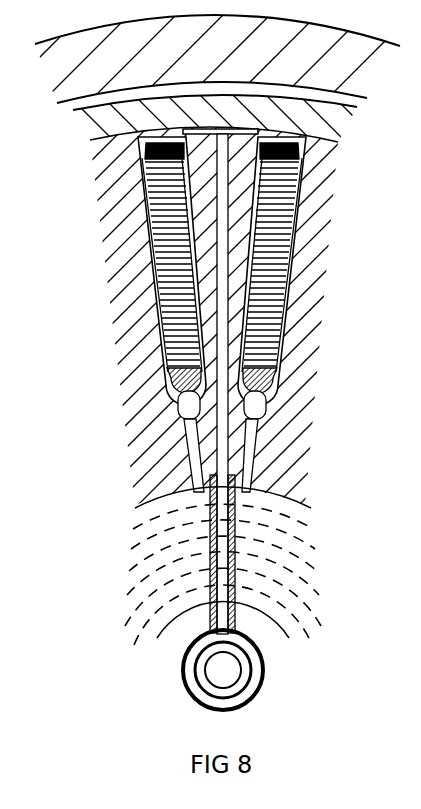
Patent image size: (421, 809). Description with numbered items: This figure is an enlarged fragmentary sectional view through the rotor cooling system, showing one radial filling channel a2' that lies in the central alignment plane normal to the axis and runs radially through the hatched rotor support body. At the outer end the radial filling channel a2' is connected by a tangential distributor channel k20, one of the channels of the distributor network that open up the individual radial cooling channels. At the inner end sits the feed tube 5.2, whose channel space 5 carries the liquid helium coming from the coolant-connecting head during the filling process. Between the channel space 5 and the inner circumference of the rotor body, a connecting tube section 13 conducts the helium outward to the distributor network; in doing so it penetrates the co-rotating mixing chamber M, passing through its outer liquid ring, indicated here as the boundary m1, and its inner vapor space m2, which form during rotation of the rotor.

The tangential distributor channel k20 is at (238, 128).
The radial filling channel a2' is at (264, 314).
The connecting tube section 13 is at (211, 524).
The mixing chamber M is at (192, 582).
The outer boundary line m1 is at (165, 598).
The vapor space m2 is at (185, 630).
The channel space 5 is at (250, 688).
The feed tube 5.2 is at (263, 664).